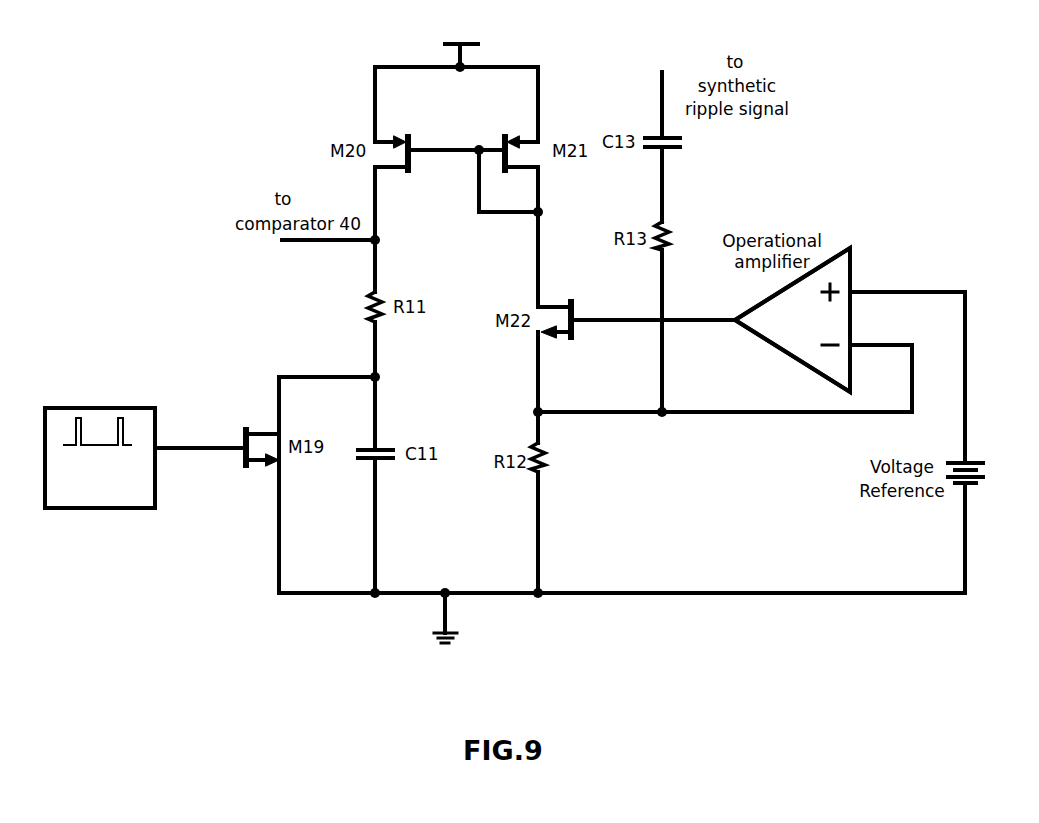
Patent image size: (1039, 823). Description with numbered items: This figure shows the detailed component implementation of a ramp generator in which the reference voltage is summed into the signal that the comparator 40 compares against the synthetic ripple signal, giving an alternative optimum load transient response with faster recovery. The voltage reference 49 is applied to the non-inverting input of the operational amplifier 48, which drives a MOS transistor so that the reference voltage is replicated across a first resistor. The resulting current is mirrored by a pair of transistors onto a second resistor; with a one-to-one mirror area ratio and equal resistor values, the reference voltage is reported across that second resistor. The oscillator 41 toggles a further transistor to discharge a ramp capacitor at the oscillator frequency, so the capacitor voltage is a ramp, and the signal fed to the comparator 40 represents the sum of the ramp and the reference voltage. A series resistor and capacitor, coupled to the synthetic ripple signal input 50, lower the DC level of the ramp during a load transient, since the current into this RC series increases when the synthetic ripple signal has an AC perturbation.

The comparator 40 is at (305, 227).
The oscillator 41 is at (68, 407).
The operational amplifier 48 is at (833, 257).
The voltage reference 49 is at (965, 397).
The synthetic ripple signal input 50 is at (662, 72).